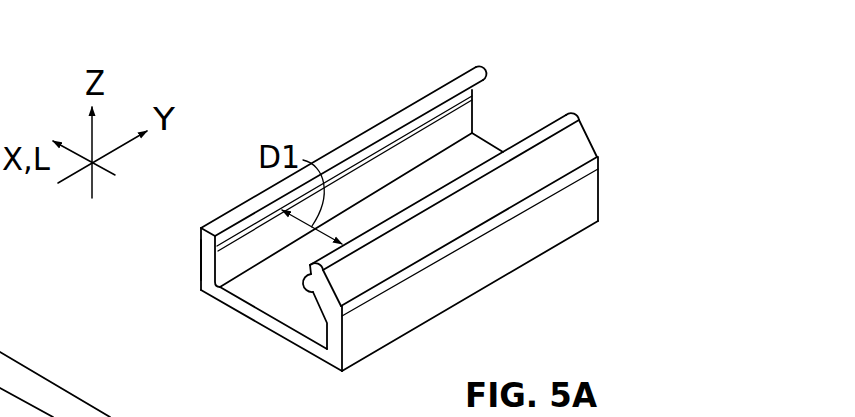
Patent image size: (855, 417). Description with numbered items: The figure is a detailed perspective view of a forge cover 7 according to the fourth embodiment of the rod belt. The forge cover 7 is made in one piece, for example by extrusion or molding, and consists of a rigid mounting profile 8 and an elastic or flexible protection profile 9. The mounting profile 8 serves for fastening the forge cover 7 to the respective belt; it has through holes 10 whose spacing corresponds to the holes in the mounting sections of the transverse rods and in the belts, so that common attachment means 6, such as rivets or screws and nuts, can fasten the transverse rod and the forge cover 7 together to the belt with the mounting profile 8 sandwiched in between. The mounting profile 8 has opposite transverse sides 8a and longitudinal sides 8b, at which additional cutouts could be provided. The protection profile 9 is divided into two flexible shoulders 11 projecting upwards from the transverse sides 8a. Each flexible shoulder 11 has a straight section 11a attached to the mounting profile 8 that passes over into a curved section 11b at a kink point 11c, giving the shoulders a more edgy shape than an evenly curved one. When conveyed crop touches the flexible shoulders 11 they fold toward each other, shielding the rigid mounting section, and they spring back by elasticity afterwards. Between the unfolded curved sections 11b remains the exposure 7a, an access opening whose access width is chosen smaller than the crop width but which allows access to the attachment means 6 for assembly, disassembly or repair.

The attachment means 6 is at (94, 384).
The forge cover 7 is at (575, 236).
The exposure 7a is at (548, 94).
The mounting profile 8 is at (469, 162).
The transverse sides of the mounting profile 8a is at (407, 335).
The longitudinal sides of the mounting profile 8b is at (288, 344).
The protection profile 9 is at (453, 232).
The through holes 10 is at (309, 283).
The flexible shoulders 11 is at (355, 142).
The straight section 11a is at (201, 270).
The curved section 11b is at (221, 226).
The kink point 11c is at (200, 227).